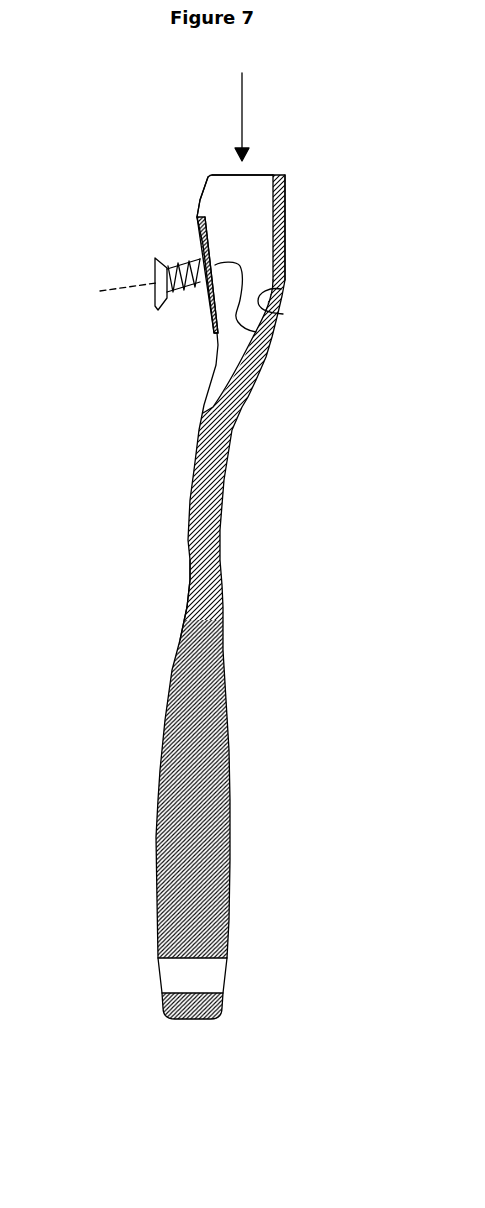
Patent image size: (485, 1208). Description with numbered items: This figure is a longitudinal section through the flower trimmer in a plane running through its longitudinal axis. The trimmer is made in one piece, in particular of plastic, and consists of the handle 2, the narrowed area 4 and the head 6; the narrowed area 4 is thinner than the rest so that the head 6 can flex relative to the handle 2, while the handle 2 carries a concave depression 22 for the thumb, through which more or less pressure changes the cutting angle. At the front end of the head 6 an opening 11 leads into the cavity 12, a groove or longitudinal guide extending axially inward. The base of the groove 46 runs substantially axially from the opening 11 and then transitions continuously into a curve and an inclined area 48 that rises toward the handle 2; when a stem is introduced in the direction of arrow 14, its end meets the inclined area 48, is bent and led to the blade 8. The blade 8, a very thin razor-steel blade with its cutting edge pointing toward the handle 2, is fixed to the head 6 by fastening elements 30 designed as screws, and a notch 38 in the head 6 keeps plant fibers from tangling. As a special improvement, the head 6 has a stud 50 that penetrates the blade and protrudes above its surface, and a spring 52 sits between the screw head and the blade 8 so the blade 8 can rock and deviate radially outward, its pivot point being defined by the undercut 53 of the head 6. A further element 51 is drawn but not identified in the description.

The handle 2 is at (205, 845).
The narrowed area 4 is at (202, 478).
The head 6 is at (285, 265).
The blade 8 is at (212, 250).
The opening 11 is at (277, 174).
The cavity 12 is at (240, 198).
The arrow 14 is at (242, 90).
The concave depression 22 is at (205, 620).
The fastening elements 30 is at (158, 297).
The notch 38 is at (258, 331).
The base of the groove 46 is at (283, 314).
The inclined area 48 is at (242, 357).
The stud 50 is at (173, 262).
The screw axis 51 is at (133, 286).
The spring 52 is at (188, 282).
The undercut 53 is at (197, 217).